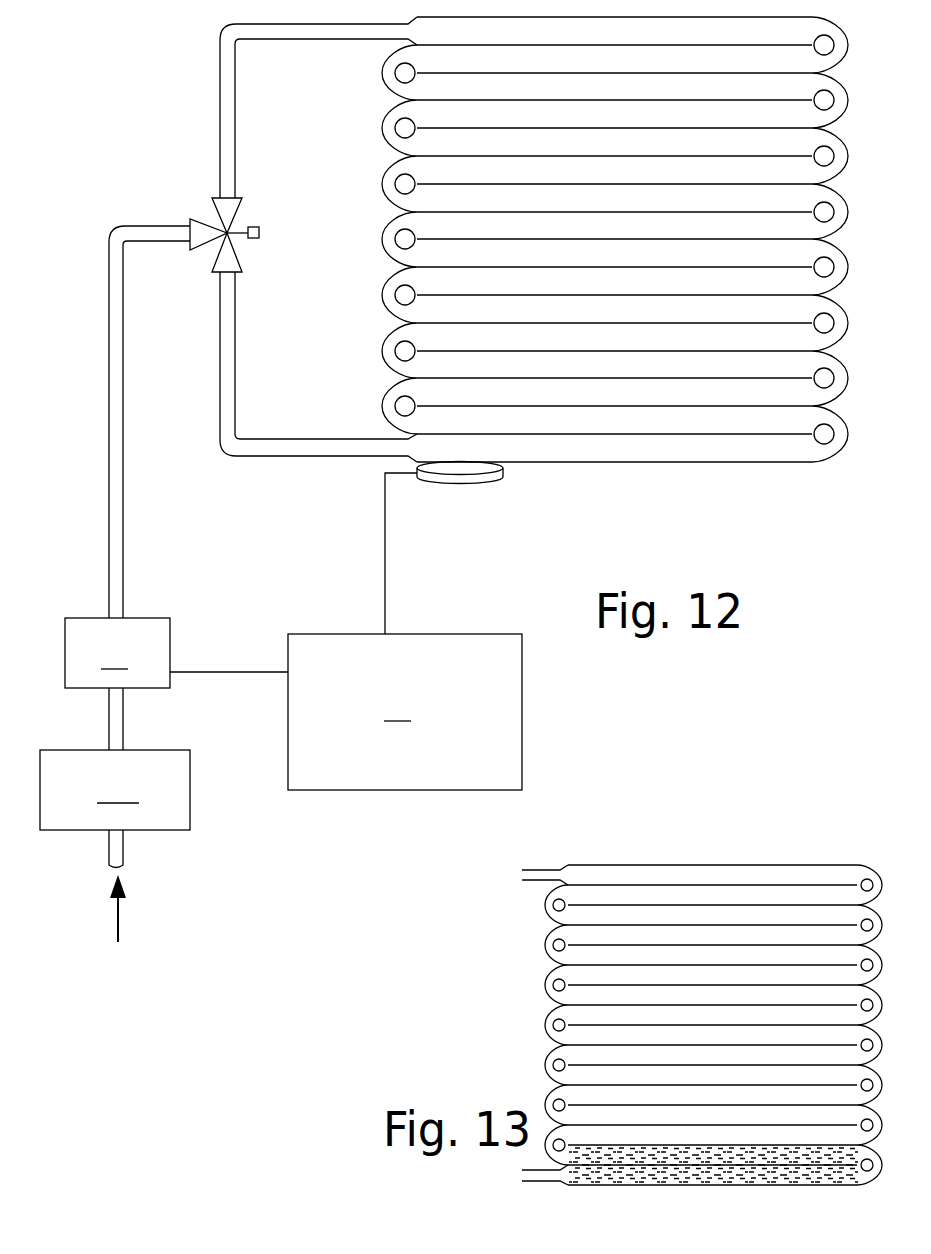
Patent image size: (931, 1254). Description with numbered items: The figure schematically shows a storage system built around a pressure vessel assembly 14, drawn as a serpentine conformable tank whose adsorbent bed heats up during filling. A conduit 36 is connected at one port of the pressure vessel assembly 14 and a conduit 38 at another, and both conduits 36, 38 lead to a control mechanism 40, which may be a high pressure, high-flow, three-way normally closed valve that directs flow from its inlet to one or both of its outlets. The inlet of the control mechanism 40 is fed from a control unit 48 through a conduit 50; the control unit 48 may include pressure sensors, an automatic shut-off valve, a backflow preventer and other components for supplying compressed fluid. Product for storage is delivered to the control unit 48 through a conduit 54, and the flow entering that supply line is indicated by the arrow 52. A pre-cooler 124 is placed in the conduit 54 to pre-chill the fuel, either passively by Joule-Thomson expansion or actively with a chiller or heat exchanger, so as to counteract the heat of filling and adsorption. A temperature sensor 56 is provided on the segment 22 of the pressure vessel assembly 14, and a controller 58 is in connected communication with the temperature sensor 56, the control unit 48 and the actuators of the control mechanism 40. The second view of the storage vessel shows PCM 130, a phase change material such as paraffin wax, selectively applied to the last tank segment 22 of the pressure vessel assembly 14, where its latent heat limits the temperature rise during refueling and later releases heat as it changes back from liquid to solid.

In FIG. 12, the pressure vessel assembly 14 is at (616, 478).
In FIG. 13, the pressure vessel assembly 14 is at (682, 852).
In FIG. 13, the segment 22 is at (655, 1187).
In FIG. 12, the conduit 36 is at (278, 40).
In FIG. 12, the conduit 38 is at (268, 456).
In FIG. 12, the control mechanism 40 is at (233, 222).
In FIG. 12, the control unit 48 is at (176, 653).
In FIG. 12, the conduit 50 is at (123, 480).
In FIG. 12, the fluid inlet flow 52 is at (118, 912).
In FIG. 12, the conduit 54 is at (123, 718).
In FIG. 12, the temperature sensor 56 is at (456, 483).
In FIG. 12, the controller 58 is at (405, 631).
In FIG. 12, the pre-cooler 124 is at (115, 790).
In FIG. 13, the PCM 130 is at (717, 1157).